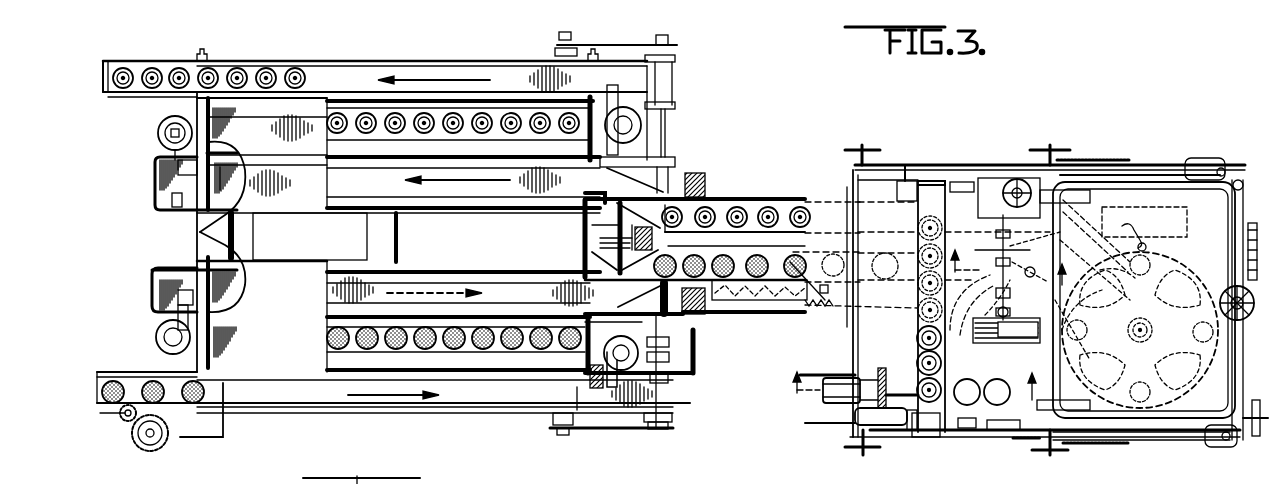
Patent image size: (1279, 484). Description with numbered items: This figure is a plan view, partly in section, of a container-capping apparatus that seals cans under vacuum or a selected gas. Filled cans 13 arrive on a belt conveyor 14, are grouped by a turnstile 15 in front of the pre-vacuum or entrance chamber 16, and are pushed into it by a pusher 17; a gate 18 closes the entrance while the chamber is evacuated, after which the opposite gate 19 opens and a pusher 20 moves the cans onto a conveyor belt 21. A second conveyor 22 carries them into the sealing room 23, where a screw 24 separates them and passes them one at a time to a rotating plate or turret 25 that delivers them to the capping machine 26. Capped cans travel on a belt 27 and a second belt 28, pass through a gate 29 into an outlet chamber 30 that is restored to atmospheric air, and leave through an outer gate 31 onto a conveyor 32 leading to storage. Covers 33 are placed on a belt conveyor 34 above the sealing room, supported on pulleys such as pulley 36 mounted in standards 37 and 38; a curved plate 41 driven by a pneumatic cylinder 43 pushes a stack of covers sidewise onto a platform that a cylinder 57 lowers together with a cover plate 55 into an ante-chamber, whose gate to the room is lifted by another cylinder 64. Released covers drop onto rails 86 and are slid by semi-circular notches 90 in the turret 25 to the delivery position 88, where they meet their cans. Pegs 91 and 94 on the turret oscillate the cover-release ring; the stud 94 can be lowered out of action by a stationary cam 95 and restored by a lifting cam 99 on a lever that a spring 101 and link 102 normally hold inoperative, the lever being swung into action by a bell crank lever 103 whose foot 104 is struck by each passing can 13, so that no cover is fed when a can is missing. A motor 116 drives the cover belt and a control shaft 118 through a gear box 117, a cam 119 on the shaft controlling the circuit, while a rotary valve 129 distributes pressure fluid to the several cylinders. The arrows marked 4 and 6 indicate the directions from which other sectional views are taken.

The cans 13 is at (280, 68).
The conveyor 32 is at (350, 74).
The outer gate 31 is at (490, 100).
The outlet chamber 30 is at (359, 140).
The gate 29 is at (402, 164).
The second belt 28 is at (505, 190).
The second conveyor 22 is at (584, 242).
The conveyor belt 21 is at (528, 290).
The door or gate 19 is at (483, 318).
The door or gate 18 is at (490, 354).
The pre-vacuum or entrance chamber 16 is at (523, 352).
The pusher 20 is at (458, 364).
The belt conveyor 14 is at (310, 404).
The pusher 17 is at (261, 405).
The grouping turnstile 15 is at (125, 420).
The belt 27 is at (756, 205).
The screw 24 is at (735, 298).
The foot 104 is at (780, 290).
The bell crank lever 103 is at (803, 305).
The spring 101 is at (822, 312).
The link 102 is at (872, 310).
The section line 6 is at (914, 396).
The sealing room 23 is at (1140, 183).
The standard 37 is at (905, 181).
The gear box 117 is at (972, 182).
The motor 116 is at (1015, 180).
The covers 33 is at (917, 222).
The control shaft 118 is at (1003, 229).
The delivery position 88 is at (1012, 248).
The cam 119 is at (1042, 242).
The section line 4 is at (1009, 259).
The capping machine 26 is at (1180, 263).
The rotating plate or turret 25 is at (1105, 265).
The peg 91 is at (1095, 270).
The peg or stud 94 is at (1030, 281).
The rails or platform 86 is at (970, 305).
The semi-circular notches 90 is at (991, 298).
The stationary cam 95 is at (988, 345).
The lifting cam 99 is at (1078, 340).
The rotary valve 129 is at (1064, 332).
The plate 41 is at (906, 378).
The fluid pressure cylinder 57 is at (967, 392).
The fluid pressure cylinder 64 is at (1021, 446).
The pneumatically operated cylinder 43 is at (846, 406).
The standard 38 is at (908, 430).
The pulley 36 is at (918, 432).
The belt conveyor 34 is at (940, 432).
The cover plate 55 is at (994, 430).